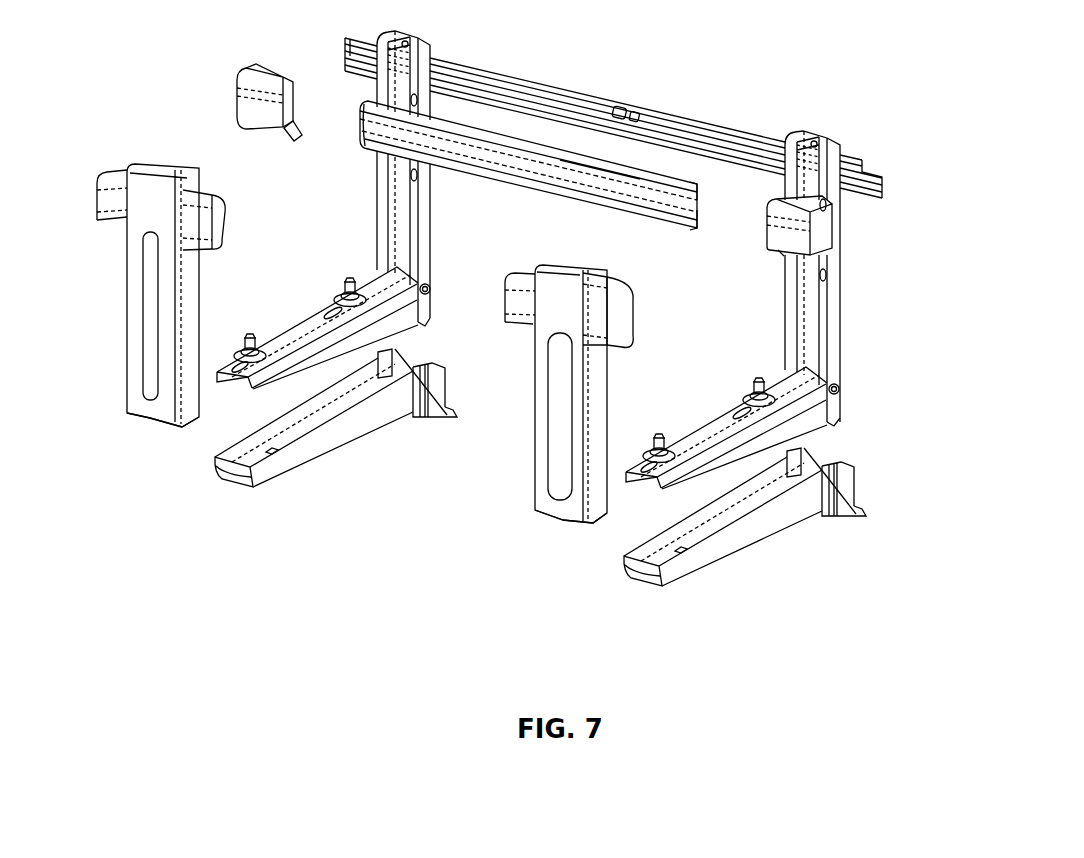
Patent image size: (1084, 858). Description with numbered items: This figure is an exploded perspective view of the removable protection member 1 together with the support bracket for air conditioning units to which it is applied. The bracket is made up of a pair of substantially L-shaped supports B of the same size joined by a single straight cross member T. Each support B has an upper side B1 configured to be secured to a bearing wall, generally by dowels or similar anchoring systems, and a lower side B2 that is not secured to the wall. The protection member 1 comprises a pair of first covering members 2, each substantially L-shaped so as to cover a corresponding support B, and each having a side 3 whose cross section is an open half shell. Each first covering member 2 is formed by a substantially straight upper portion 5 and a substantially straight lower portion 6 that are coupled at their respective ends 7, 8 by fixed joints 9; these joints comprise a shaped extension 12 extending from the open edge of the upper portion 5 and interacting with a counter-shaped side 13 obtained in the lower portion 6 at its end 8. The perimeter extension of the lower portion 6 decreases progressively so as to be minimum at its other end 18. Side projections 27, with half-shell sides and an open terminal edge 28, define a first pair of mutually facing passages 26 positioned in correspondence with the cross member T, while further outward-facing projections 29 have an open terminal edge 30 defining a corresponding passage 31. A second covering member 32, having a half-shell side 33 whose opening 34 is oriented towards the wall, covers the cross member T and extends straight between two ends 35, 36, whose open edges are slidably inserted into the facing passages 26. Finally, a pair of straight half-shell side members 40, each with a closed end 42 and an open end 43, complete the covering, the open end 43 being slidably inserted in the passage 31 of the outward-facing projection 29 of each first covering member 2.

The protection member 1 is at (206, 40).
The first covering member 2 is at (122, 293).
The side 3 is at (145, 413).
The upper portion 5 is at (130, 374).
The lower portion 6 is at (359, 433).
The end 7 is at (153, 433).
The end 8 is at (430, 363).
The fixed joint 9 is at (193, 429).
The shaped extension 12 is at (613, 518).
The counter-shaped side 13 is at (450, 396).
The end 18 is at (230, 469).
The passage 26 is at (95, 196).
The side projection 27 is at (84, 173).
The open terminal edge 28 is at (97, 223).
The projection 29 is at (208, 190).
The open terminal edge 30 is at (226, 245).
The passage 31 is at (216, 216).
The second covering member 32 is at (571, 182).
The side 33 is at (607, 193).
The opening 34 is at (700, 210).
The end 35 is at (700, 191).
The end 36 is at (354, 120).
The side member 40 is at (258, 68).
The closed end 42 is at (234, 88).
The open end 43 is at (301, 139).
The support B is at (373, 219).
The upper side B1 is at (425, 212).
The lower side B2 is at (283, 333).
The cross member T is at (565, 96).